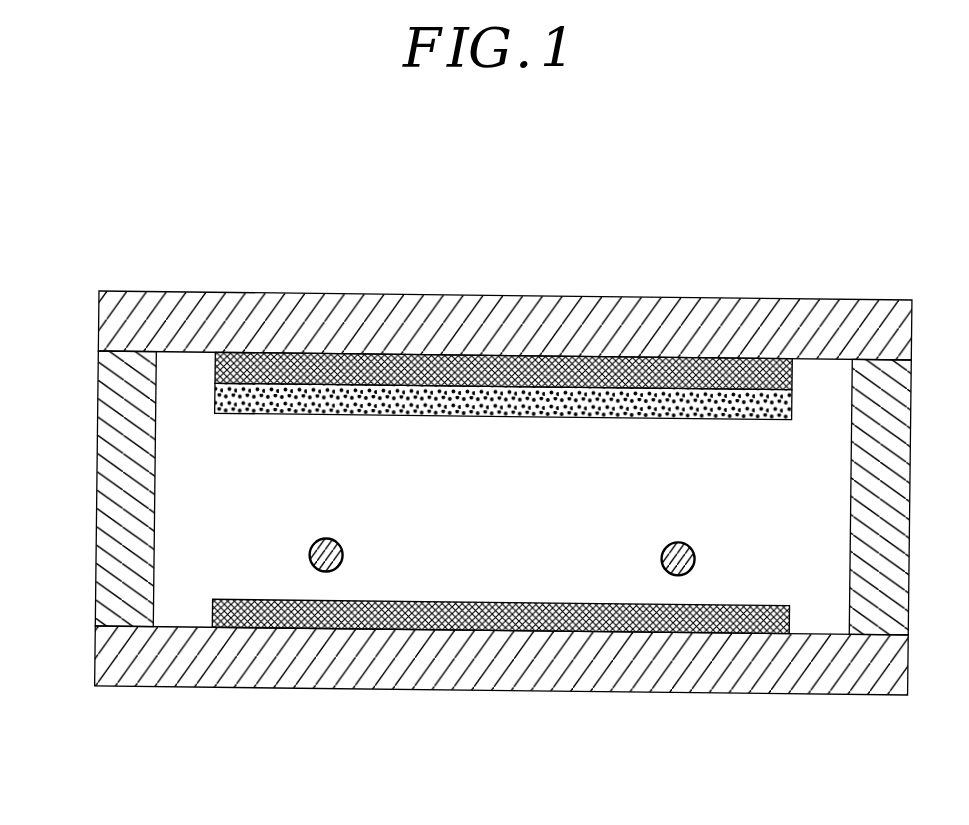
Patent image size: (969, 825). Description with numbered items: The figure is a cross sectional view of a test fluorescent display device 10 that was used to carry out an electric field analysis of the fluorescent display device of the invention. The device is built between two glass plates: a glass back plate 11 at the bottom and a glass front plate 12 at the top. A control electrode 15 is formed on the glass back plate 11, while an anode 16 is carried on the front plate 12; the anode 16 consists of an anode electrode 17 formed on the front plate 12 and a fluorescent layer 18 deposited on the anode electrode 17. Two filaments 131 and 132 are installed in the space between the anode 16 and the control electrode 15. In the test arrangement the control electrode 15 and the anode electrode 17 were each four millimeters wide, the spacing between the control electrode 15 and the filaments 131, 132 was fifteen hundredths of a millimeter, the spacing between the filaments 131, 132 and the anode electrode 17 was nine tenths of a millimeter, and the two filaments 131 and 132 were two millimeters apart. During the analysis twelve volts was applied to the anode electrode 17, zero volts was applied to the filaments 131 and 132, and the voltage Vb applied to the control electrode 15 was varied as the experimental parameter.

The test fluorescent display device 10 is at (762, 193).
The glass back plate 11 is at (545, 676).
The glass front plate 12 is at (278, 300).
The control electrode 15 is at (441, 624).
The anode 16 is at (203, 384).
The anode electrode 17 is at (485, 362).
The fluorescent layer 18 is at (627, 400).
The filament 131 is at (318, 570).
The filament 132 is at (680, 577).